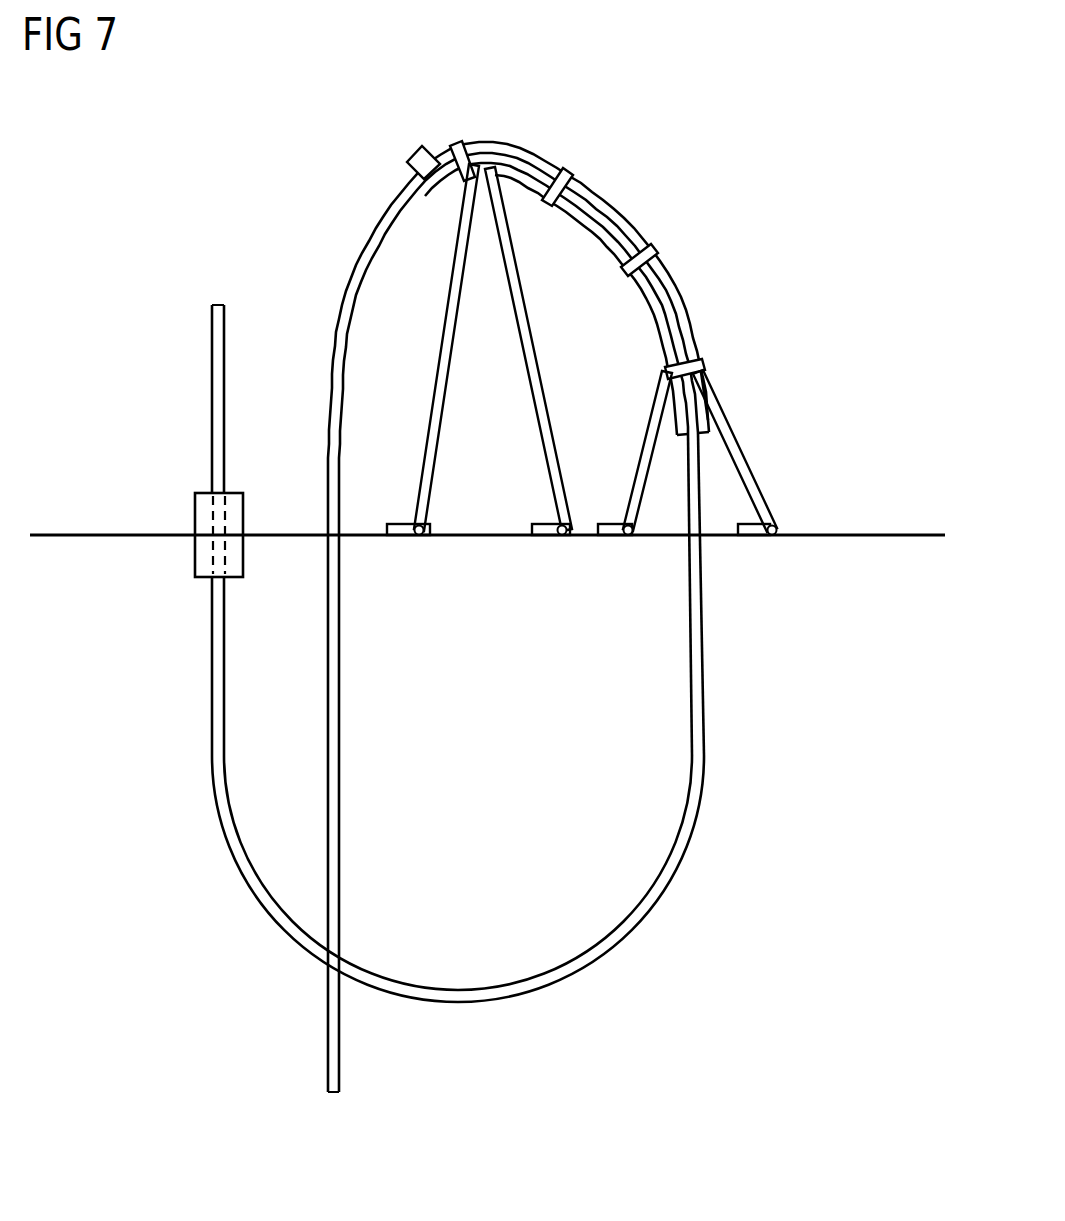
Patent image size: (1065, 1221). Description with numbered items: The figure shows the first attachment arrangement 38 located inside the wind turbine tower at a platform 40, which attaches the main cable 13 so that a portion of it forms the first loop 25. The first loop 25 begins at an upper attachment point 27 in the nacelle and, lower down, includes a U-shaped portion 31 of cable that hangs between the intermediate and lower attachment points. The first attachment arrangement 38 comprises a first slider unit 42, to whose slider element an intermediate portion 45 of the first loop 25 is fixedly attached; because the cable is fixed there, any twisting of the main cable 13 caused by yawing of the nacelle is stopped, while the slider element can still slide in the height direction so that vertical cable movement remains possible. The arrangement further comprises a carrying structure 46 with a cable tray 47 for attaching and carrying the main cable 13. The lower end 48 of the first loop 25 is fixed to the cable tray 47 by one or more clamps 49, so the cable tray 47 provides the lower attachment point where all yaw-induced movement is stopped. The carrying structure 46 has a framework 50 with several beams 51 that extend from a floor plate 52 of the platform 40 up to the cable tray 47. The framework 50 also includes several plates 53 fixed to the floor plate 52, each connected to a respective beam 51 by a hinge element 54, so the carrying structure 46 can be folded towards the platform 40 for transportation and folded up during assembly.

The main cable 13 is at (369, 653).
The first loop 25 is at (369, 653).
The upper attachment point 27 is at (212, 358).
The U-shaped portion 31 is at (703, 720).
The first attachment arrangement 38 is at (166, 173).
The platform 40 is at (62, 533).
The first slider unit 42 is at (195, 497).
The intermediate portion 45 is at (228, 512).
The carrying structure 46 is at (596, 252).
The cable tray 47 is at (639, 162).
The lower end 48 is at (705, 400).
The clamps 49 is at (453, 140).
The framework 50 is at (576, 348).
The beams 51 is at (520, 318).
The floor plate 52 is at (910, 533).
The plates 53 is at (398, 538).
The hinge element 54 is at (420, 538).